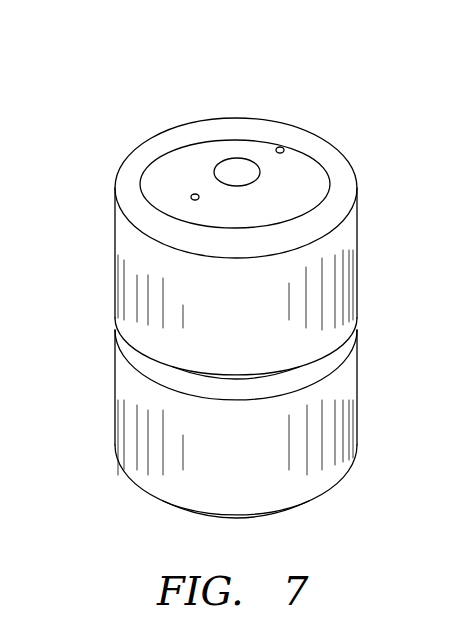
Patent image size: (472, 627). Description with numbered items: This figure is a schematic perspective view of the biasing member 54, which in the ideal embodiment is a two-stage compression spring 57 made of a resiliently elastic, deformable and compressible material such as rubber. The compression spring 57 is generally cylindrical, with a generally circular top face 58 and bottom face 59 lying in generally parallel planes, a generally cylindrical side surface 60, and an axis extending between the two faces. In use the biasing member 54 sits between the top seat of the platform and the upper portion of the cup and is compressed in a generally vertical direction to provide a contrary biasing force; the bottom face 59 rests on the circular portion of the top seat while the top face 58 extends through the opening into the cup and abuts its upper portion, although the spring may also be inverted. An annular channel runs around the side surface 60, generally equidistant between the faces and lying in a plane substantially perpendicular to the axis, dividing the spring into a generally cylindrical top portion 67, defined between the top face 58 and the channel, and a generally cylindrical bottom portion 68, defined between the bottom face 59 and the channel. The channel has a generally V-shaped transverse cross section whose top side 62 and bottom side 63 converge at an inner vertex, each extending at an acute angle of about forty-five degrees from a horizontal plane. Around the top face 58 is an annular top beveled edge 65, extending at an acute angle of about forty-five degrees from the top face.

The biasing member 54 is at (118, 134).
The two-stage compression spring 57 is at (162, 127).
The top face 58 is at (250, 132).
The annular top beveled edge 65 is at (130, 187).
The cylindrical side surface 60 is at (356, 255).
The top portion 67 is at (337, 287).
The top side 62 is at (130, 343).
The bottom side 63 is at (338, 353).
The bottom portion 68 is at (345, 410).
The bottom face 59 is at (229, 521).